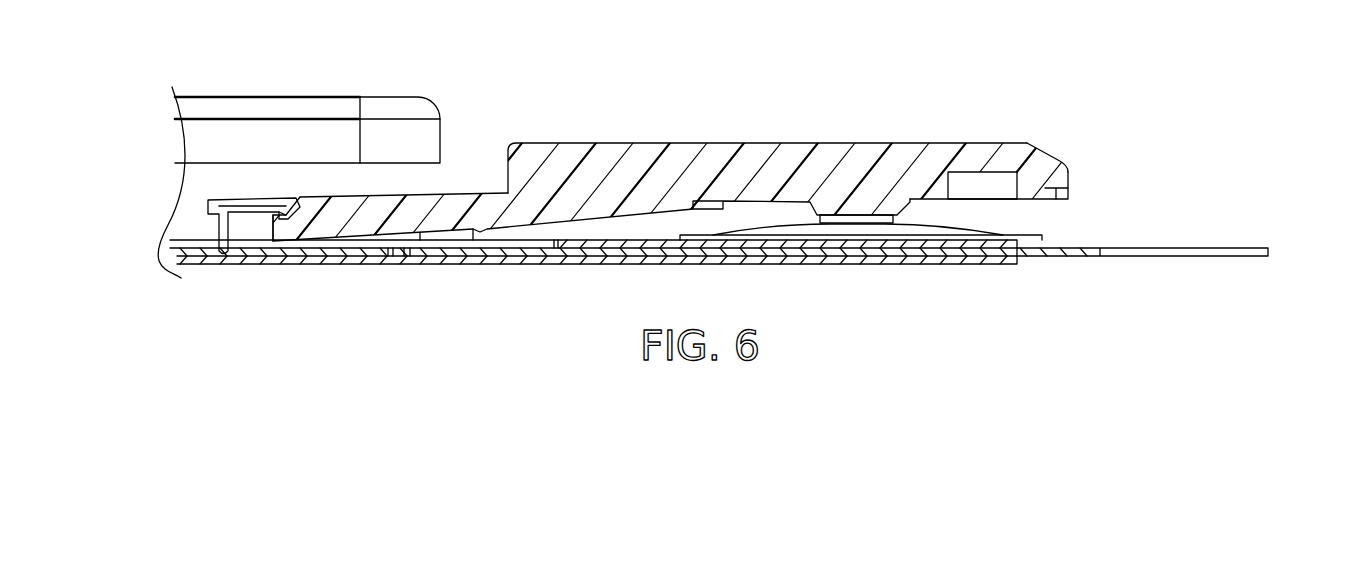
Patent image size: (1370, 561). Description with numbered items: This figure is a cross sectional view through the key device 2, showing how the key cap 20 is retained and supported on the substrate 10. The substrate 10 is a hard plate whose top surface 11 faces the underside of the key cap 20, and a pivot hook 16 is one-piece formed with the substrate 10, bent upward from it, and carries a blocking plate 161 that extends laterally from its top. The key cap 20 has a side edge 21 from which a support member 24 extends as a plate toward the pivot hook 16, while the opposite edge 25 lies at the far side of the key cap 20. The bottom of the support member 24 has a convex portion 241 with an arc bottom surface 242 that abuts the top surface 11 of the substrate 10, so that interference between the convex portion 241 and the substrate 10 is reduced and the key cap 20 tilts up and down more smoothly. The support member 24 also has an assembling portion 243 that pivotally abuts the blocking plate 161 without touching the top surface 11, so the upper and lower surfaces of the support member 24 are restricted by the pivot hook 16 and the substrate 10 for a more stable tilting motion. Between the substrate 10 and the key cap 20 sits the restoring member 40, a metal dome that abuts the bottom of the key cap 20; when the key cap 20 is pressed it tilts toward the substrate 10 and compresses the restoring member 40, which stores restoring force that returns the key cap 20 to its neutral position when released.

The key device 2 is at (1067, 98).
The substrate 10 is at (1268, 252).
The top surface 11 is at (1083, 245).
The pivot hook 16 is at (213, 215).
The blocking plate 161 is at (243, 196).
The key cap 20 is at (293, 95).
The side edge 21 is at (508, 163).
The support member 24 is at (400, 217).
The convex portion 241 is at (260, 242).
The arc bottom surface 242 is at (230, 213).
The assembling portion 243 is at (282, 197).
The opposite edge 25 is at (1057, 162).
The restoring member 40 is at (866, 225).